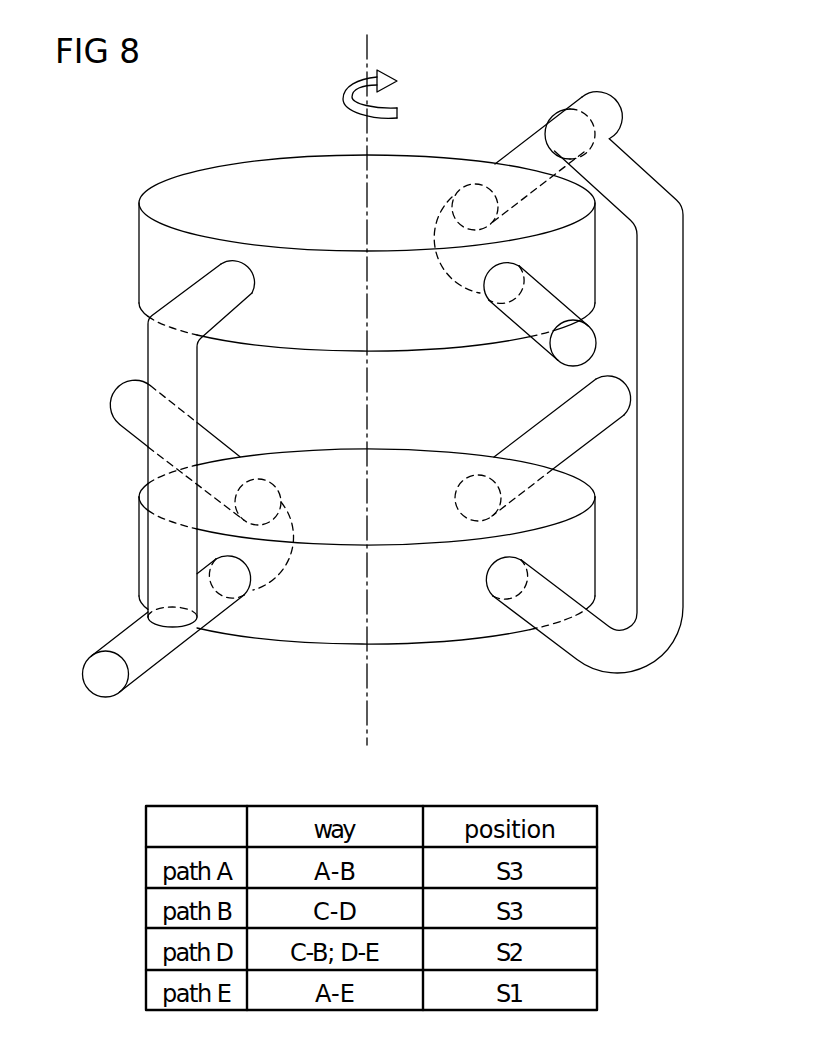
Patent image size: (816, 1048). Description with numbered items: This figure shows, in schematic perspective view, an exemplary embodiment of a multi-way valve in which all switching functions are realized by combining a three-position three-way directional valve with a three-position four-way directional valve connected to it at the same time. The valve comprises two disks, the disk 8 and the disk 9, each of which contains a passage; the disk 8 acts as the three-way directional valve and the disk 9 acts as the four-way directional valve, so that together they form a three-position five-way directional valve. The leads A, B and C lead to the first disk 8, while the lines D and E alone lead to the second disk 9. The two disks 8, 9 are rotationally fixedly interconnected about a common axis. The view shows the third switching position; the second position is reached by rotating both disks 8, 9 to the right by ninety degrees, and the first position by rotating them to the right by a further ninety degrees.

The disk 8 is at (272, 173).
The disk 9 is at (277, 625).
The line A is at (588, 369).
The line B is at (554, 316).
The line C is at (150, 631).
The line D is at (169, 418).
The line E is at (562, 422).